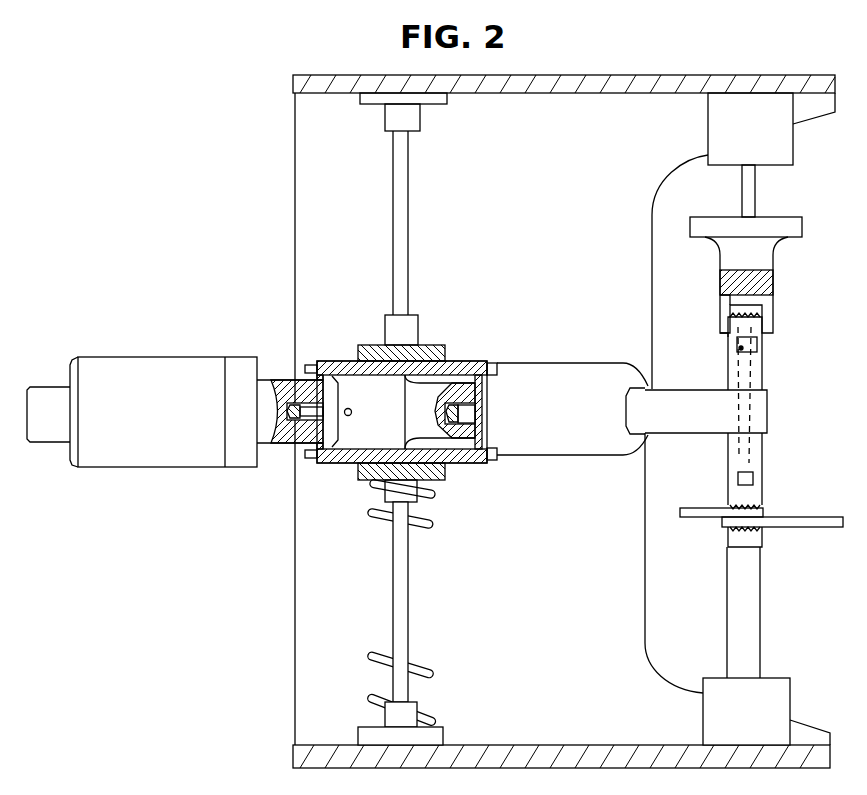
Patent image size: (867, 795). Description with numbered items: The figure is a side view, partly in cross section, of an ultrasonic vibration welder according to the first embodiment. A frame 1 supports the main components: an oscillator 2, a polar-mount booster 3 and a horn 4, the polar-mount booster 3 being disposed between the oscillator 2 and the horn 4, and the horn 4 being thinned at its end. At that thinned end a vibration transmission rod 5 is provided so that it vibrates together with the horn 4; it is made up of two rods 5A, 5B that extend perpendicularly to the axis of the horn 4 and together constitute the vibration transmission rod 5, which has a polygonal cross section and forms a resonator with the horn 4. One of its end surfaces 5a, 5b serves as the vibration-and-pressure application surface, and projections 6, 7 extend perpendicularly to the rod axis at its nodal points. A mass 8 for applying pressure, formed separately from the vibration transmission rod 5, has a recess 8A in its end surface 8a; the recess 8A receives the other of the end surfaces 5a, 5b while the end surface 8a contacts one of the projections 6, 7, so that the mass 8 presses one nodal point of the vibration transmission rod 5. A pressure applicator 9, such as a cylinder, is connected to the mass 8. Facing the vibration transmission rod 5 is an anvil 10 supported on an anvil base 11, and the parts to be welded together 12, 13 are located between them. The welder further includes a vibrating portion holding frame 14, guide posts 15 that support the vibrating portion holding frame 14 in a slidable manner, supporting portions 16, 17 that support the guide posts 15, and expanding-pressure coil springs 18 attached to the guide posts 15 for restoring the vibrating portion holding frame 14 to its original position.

The frame 1 is at (294, 585).
The oscillator 2 is at (150, 365).
The polar-mount booster 3 is at (462, 361).
The horn 4 is at (563, 375).
The vibration transmission rod 5 is at (763, 382).
The rod 5A is at (757, 357).
The rod 5B is at (762, 460).
The end surface 5a is at (757, 317).
The end surface 5b is at (757, 498).
The projection 6 is at (738, 347).
The projection 7 is at (738, 479).
The mass 8 is at (762, 256).
The recess 8A is at (720, 304).
The end surface 8a is at (722, 337).
The pressure applicator 9 is at (777, 143).
The anvil 10 is at (755, 538).
The anvil base 11 is at (750, 603).
The part to be welded 12 is at (703, 517).
The part to be welded 13 is at (828, 527).
The vibrating portion holding frame 14 is at (370, 344).
The guide post 15 is at (402, 230).
The supporting portion 16 is at (407, 118).
The supporting portion 17 is at (432, 738).
The expanding-pressure coil spring 18 is at (435, 525).